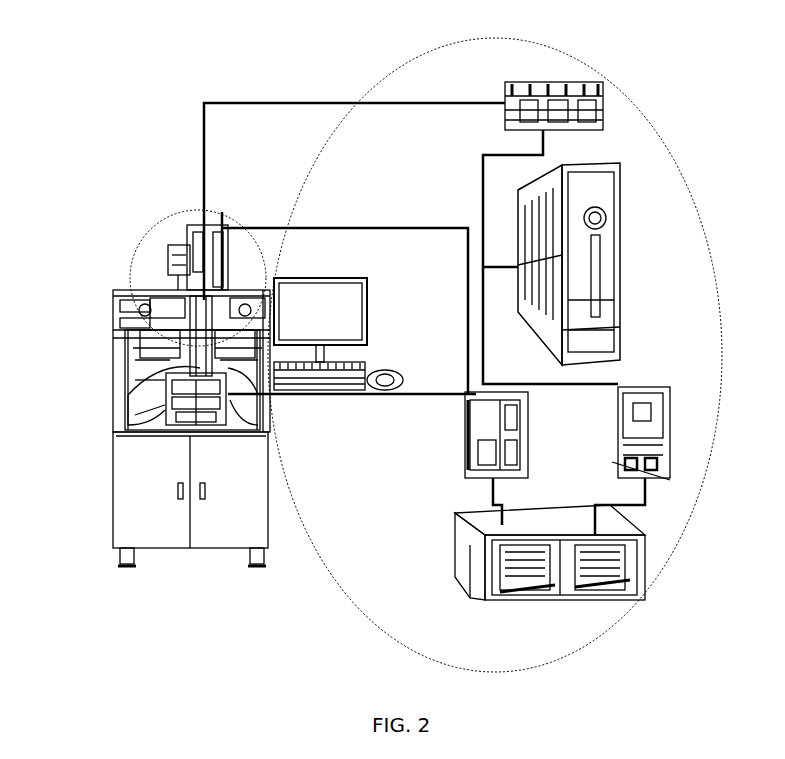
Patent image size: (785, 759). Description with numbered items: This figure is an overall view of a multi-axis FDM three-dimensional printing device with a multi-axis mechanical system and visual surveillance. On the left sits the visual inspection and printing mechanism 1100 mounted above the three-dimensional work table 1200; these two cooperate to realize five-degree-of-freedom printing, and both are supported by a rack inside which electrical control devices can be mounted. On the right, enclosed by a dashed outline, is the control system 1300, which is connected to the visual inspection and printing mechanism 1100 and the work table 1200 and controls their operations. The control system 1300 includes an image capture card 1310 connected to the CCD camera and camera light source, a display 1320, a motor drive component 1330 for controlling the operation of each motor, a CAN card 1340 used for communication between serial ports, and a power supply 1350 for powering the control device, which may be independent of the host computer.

The visual inspection and printing mechanism 1100 is at (152, 230).
The Yθ1θ2 three-dimensional work table 1200 is at (135, 407).
The control system 1300 is at (647, 116).
The image capture card 1310 is at (554, 97).
The display 1320 is at (320, 278).
The motor drive component 1330 is at (519, 435).
The CAN card 1340 is at (648, 424).
The power supply 1350 is at (550, 565).